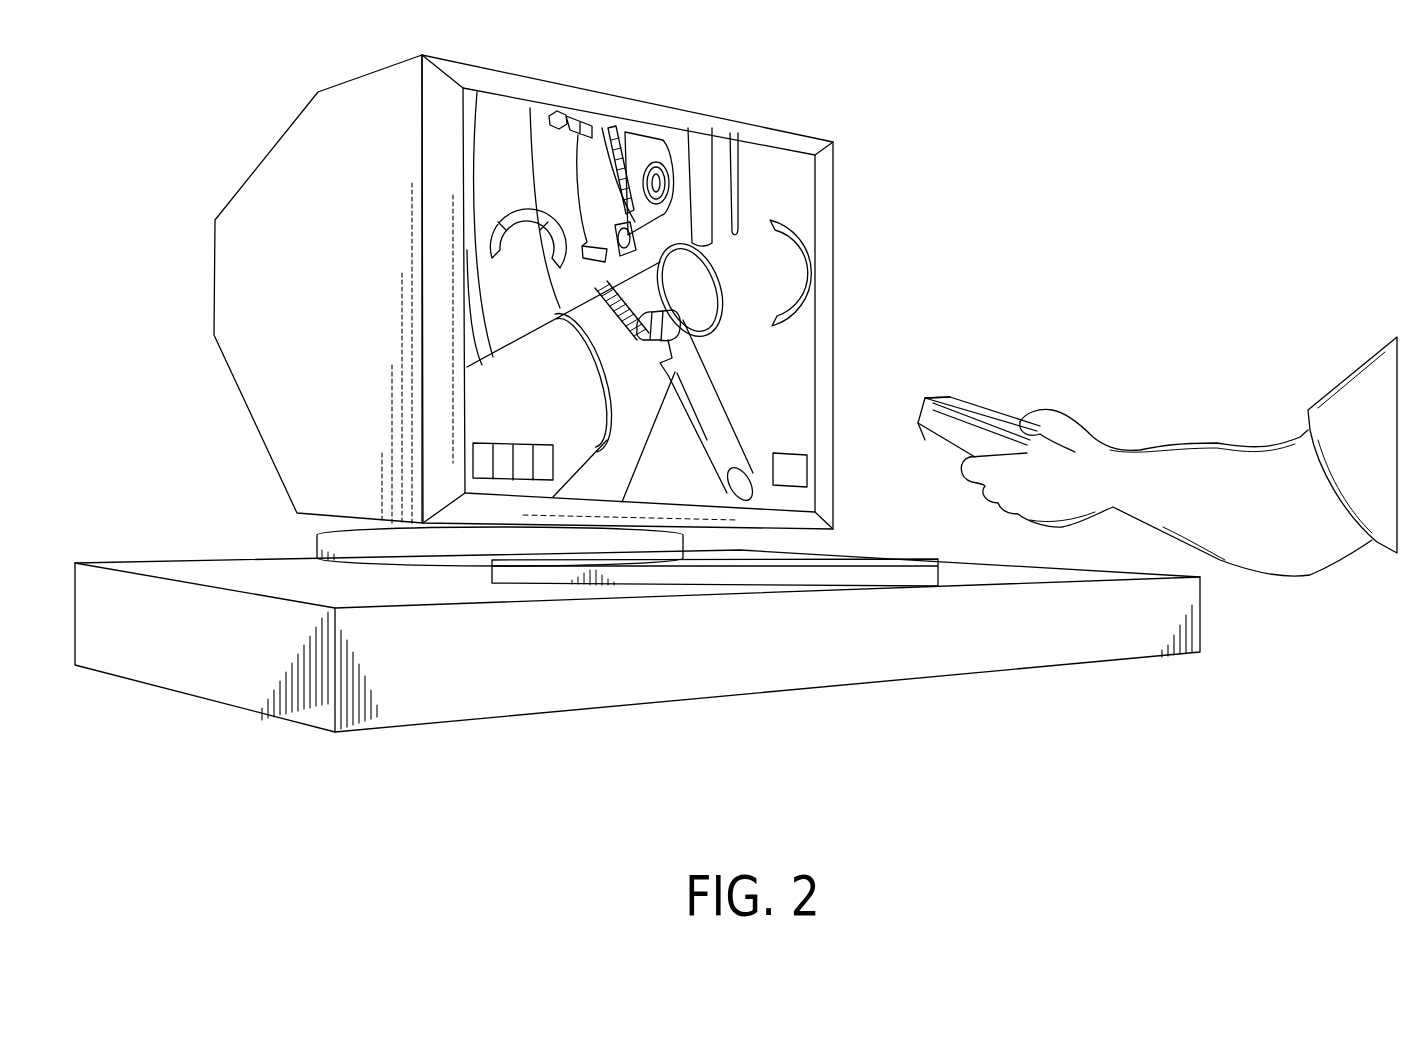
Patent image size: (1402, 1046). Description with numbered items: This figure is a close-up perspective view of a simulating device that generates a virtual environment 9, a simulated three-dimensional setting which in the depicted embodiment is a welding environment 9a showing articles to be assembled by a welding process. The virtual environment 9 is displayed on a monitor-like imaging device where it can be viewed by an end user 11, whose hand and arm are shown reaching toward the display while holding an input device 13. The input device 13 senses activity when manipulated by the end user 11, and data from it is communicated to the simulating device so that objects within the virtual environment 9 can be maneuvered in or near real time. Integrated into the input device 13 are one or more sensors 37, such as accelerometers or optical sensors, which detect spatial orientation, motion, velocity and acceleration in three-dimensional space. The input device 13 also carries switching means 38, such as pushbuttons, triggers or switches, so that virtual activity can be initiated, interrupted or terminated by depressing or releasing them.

The virtual environment 9 is at (778, 187).
The welding environment 9a is at (763, 167).
The end user 11 is at (1360, 388).
The input device 13 is at (973, 417).
The sensors 37 is at (953, 341).
The switching means 38 is at (917, 456).